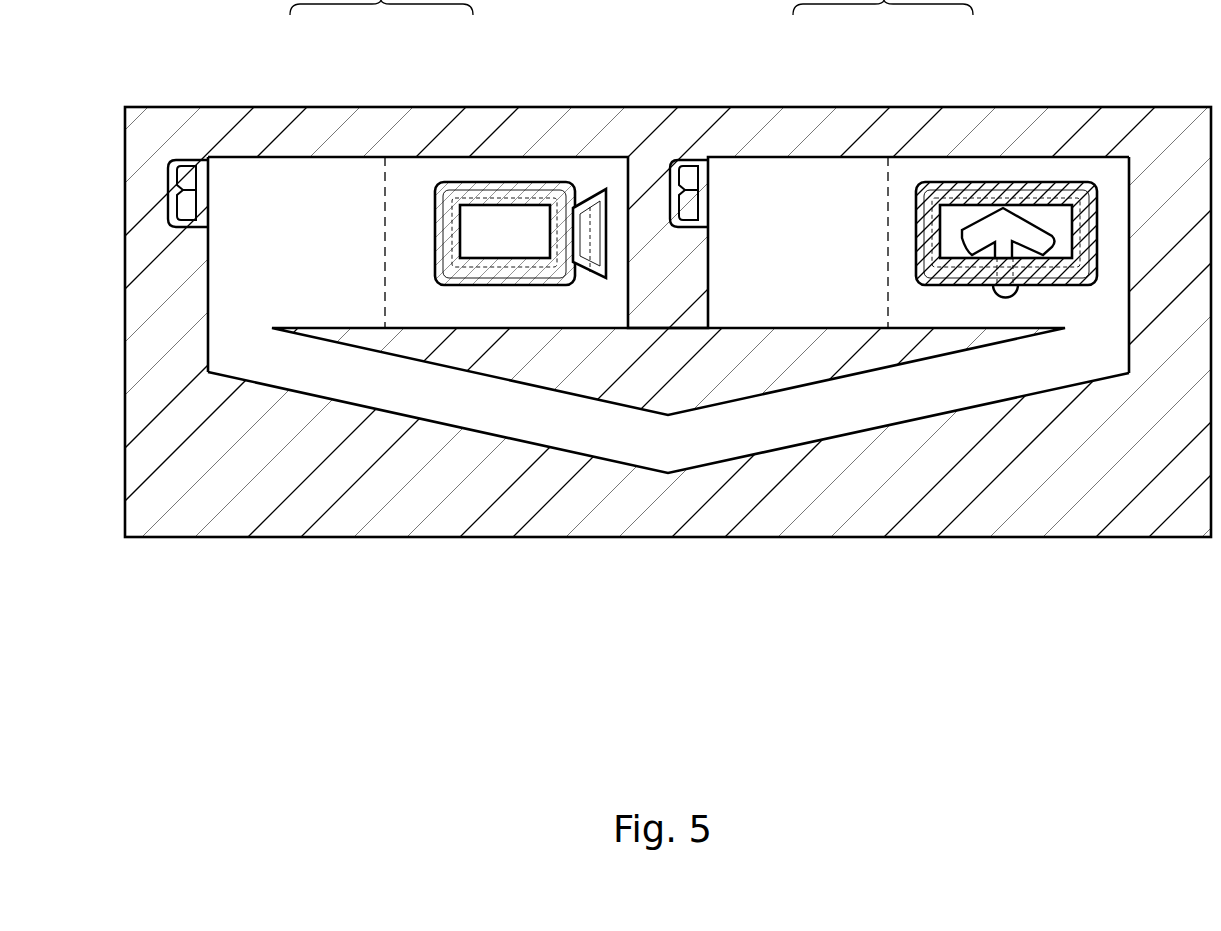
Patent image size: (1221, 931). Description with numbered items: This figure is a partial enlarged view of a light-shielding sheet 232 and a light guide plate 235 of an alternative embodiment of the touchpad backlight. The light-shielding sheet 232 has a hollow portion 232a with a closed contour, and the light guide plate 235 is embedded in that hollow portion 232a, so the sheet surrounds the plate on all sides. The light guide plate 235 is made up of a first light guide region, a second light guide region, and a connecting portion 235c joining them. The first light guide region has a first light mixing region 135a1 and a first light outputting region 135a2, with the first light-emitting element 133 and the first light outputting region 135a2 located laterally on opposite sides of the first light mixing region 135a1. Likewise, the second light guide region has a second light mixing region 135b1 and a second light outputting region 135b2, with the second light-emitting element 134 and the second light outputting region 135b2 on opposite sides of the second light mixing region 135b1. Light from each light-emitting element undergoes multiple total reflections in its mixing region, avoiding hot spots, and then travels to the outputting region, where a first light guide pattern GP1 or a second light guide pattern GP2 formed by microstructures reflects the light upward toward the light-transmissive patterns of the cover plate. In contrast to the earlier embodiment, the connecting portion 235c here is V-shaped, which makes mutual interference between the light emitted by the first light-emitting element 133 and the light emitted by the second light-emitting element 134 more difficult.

The first light-emitting element 133 is at (185, 163).
The second light-emitting element 134 is at (685, 163).
The first light mixing region 135a1 is at (303, 175).
The first light outputting region 135a2 is at (400, 172).
The second light mixing region 135b1 is at (807, 175).
The second light outputting region 135b2 is at (903, 175).
The first light guide pattern GP1 is at (510, 180).
The second light guide pattern GP2 is at (1033, 180).
The light-shielding sheet 232 is at (177, 478).
The hollow portion 232a is at (353, 412).
The light guide plate 235 is at (969, 384).
The connecting portion 235c is at (505, 418).